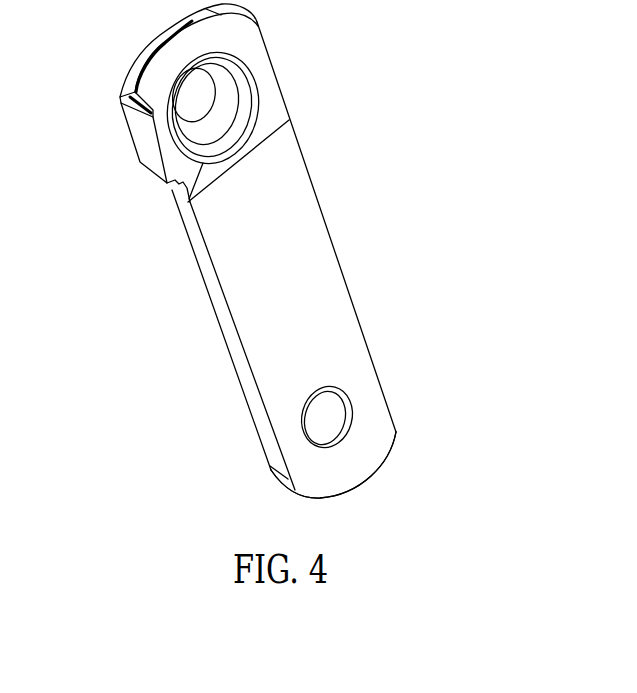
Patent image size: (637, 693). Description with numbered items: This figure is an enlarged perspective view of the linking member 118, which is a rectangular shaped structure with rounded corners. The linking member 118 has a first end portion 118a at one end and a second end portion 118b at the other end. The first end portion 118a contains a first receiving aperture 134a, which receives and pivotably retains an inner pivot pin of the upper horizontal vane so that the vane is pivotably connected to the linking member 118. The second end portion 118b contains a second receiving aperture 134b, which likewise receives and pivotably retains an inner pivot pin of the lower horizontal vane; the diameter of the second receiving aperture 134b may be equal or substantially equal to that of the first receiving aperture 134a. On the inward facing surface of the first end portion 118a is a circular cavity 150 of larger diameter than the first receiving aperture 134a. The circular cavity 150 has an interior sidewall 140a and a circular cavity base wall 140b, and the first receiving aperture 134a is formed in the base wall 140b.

The linking member 118 is at (432, 167).
The first end portion 118a is at (147, 82).
The second end portion 118b is at (394, 437).
The first receiving aperture 134a is at (187, 96).
The second receiving aperture 134b is at (312, 412).
The interior sidewall 140a is at (186, 185).
The circular cavity base wall 140b is at (177, 145).
The circular cavity 150 is at (244, 110).